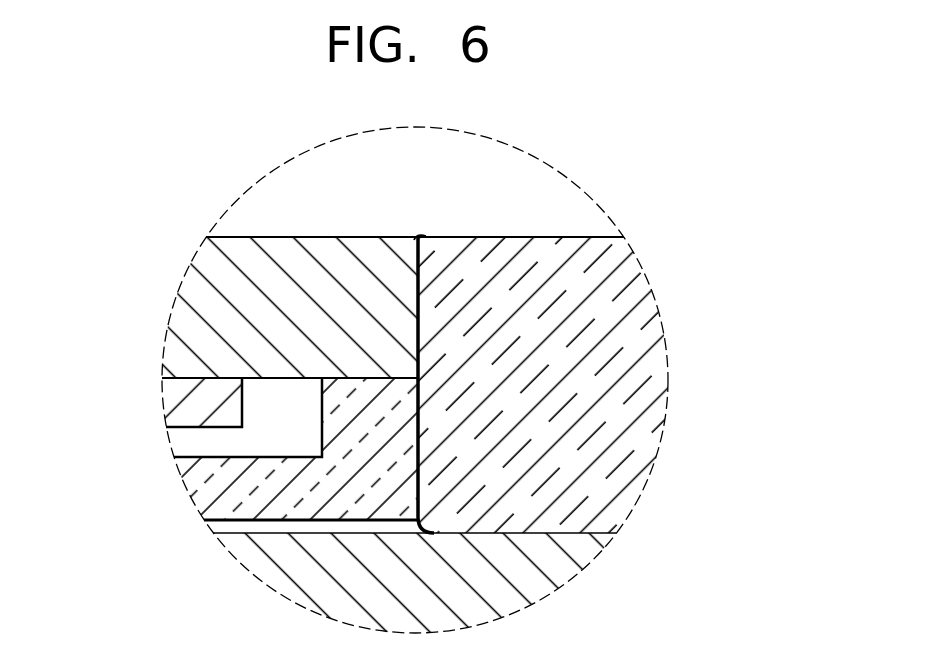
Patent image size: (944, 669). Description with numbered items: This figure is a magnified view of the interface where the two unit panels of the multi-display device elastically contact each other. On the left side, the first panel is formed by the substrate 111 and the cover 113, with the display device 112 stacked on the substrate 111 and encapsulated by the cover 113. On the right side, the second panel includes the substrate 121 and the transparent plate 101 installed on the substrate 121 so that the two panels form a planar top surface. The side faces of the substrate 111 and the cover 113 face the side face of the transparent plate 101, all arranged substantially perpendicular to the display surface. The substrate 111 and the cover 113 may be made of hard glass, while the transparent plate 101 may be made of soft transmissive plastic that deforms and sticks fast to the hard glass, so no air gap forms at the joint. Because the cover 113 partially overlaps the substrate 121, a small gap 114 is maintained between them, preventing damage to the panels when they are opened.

The transparent plate 101 is at (655, 386).
The substrate 111 is at (185, 311).
The display device 112 is at (178, 399).
The cover 113 is at (198, 485).
The gap 114 is at (215, 528).
The substrate 121 is at (552, 580).